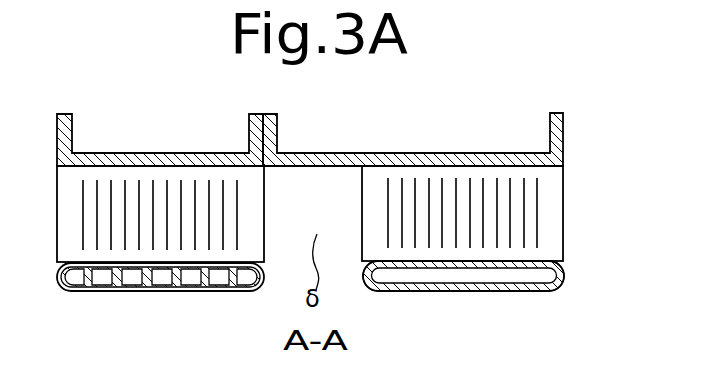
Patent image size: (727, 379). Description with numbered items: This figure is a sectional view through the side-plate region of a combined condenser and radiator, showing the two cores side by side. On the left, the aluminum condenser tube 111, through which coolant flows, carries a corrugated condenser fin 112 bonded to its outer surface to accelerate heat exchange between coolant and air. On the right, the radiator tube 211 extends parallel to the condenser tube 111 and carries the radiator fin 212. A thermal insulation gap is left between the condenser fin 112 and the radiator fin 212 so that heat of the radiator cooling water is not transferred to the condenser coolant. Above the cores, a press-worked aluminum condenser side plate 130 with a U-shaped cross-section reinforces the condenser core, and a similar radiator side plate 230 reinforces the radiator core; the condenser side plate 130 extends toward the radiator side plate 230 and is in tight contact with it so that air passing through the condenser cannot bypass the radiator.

The condenser side plate 130 is at (164, 153).
The radiator side plate 230 is at (423, 152).
The condenser fin 112 is at (253, 225).
The radiator fin 212 is at (555, 216).
The condenser tube 111 is at (175, 292).
The radiator tube 211 is at (473, 292).